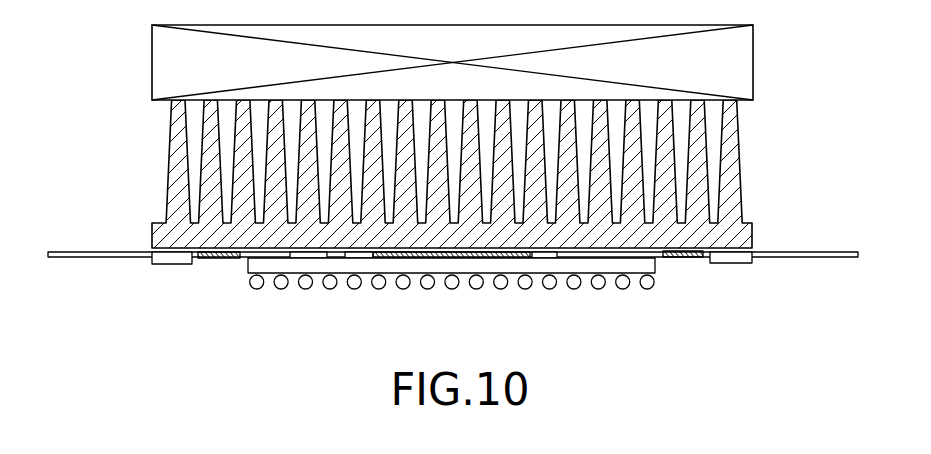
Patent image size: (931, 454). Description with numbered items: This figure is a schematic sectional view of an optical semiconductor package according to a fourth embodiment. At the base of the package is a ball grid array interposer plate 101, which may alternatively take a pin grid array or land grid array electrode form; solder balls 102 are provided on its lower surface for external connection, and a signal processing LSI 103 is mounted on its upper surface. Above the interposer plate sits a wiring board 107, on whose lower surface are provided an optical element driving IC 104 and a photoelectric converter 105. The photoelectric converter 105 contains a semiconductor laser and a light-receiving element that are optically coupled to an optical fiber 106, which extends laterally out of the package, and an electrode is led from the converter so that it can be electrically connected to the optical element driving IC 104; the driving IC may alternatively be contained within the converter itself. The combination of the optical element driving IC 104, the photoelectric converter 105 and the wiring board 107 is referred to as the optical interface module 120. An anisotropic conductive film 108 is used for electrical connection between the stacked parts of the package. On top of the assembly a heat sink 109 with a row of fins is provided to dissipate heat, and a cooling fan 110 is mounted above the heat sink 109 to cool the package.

The ball grid array interposer plate 101 is at (392, 268).
The solder balls 102 is at (526, 289).
The signal processing LSI 103 is at (465, 259).
The optical element driving IC 104 is at (215, 259).
The photoelectric converter 105 is at (162, 265).
The optical fiber 106 is at (112, 259).
The wiring board 107 is at (290, 259).
The anisotropic conductive film 108 is at (340, 259).
The heat sink 109 is at (733, 192).
The cooling fan 110 is at (744, 40).
The optical interface module 120 is at (195, 290).